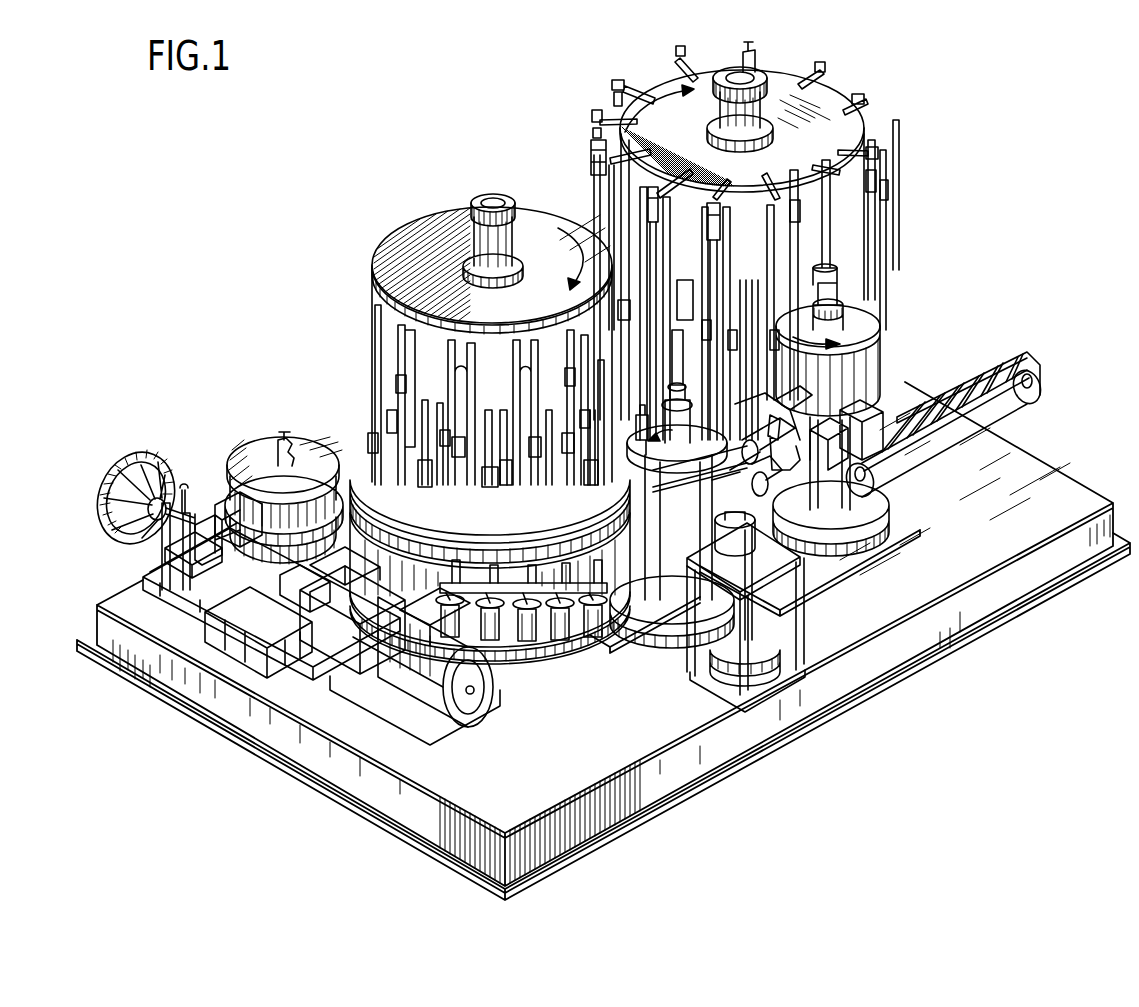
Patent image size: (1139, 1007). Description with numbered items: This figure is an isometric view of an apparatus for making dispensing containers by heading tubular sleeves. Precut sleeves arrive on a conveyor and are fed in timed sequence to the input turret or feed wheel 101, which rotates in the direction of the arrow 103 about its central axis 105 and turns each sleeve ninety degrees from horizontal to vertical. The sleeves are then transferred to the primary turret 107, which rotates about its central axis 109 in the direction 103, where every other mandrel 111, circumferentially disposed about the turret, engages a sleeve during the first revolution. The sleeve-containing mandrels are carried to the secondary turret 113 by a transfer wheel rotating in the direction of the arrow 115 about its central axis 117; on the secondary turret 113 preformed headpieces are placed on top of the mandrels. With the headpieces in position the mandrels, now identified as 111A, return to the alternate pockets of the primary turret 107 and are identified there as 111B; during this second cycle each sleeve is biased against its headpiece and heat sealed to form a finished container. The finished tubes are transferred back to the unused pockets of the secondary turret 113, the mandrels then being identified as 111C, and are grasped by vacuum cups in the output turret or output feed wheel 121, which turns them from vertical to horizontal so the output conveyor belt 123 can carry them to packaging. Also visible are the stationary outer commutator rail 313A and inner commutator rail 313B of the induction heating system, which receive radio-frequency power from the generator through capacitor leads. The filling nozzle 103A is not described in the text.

The input turret or feed wheel 101 is at (678, 489).
The arrow 103 is at (432, 237).
The filling nozzle 103A is at (648, 404).
The central axis 105 is at (664, 387).
The primary turret 107 is at (433, 314).
The central axis 109 is at (500, 203).
The mandrels 111 is at (537, 639).
The mandrels 111A is at (766, 393).
The mandrels 111B is at (510, 612).
The mandrels 111C is at (781, 409).
The secondary turret 113 is at (780, 228).
The arrow 115 is at (622, 123).
The central axis 117 is at (745, 72).
The output turret or output feed wheel 121 is at (881, 333).
The output conveyor belt 123 is at (997, 348).
The outer commutator rail 313A is at (345, 437).
The inner commutator rail 313B is at (424, 596).